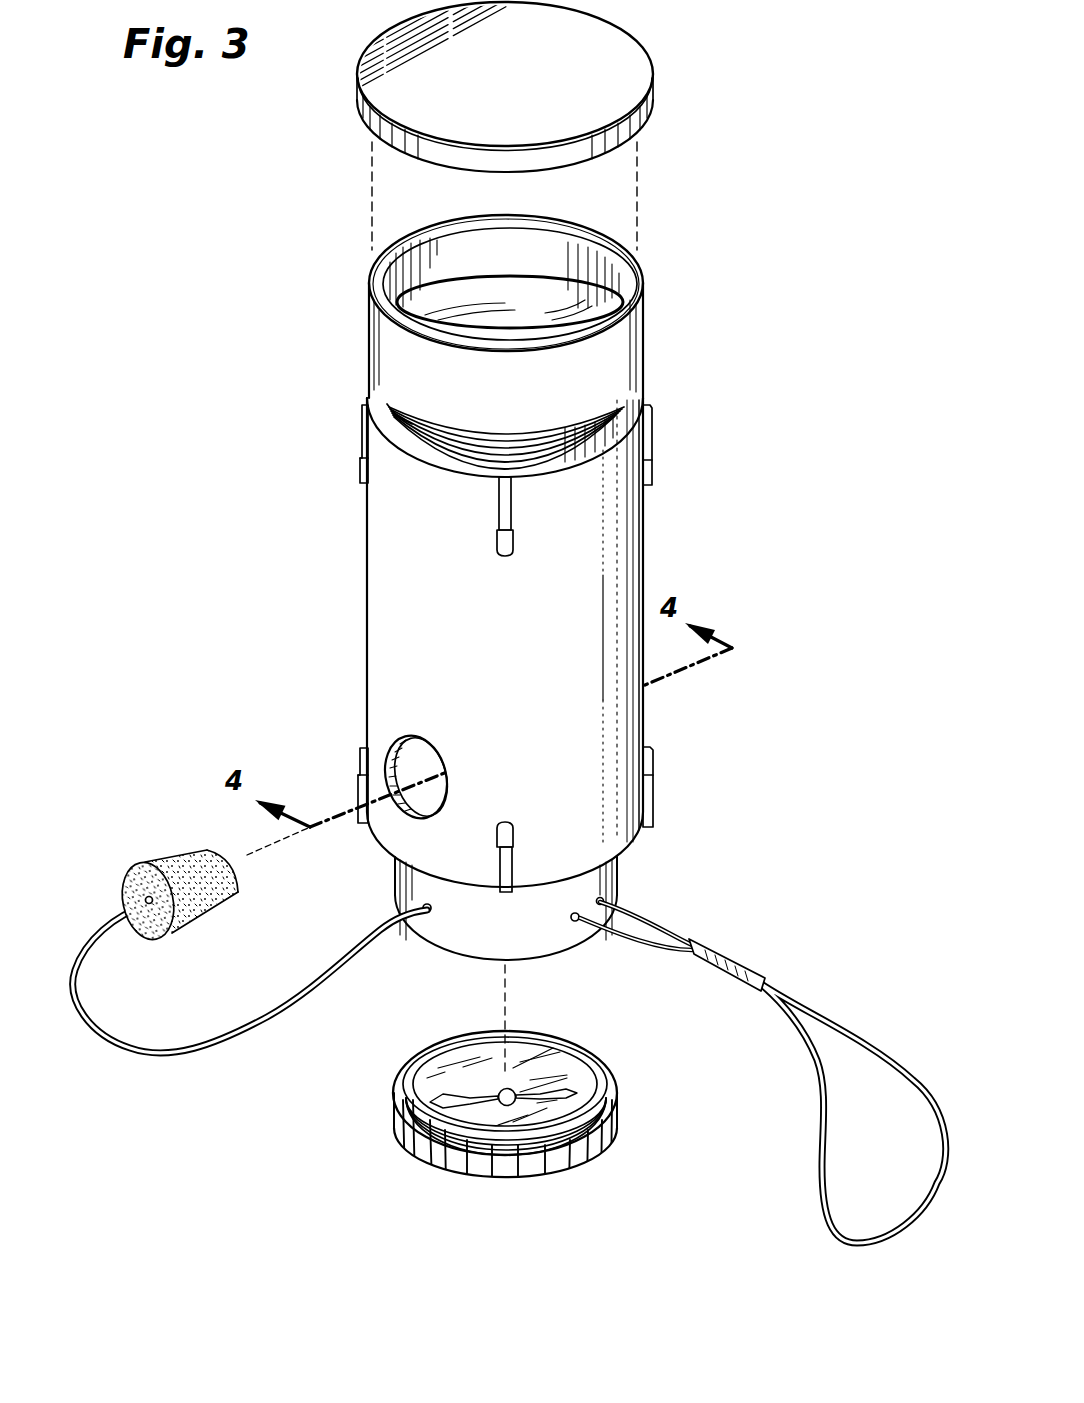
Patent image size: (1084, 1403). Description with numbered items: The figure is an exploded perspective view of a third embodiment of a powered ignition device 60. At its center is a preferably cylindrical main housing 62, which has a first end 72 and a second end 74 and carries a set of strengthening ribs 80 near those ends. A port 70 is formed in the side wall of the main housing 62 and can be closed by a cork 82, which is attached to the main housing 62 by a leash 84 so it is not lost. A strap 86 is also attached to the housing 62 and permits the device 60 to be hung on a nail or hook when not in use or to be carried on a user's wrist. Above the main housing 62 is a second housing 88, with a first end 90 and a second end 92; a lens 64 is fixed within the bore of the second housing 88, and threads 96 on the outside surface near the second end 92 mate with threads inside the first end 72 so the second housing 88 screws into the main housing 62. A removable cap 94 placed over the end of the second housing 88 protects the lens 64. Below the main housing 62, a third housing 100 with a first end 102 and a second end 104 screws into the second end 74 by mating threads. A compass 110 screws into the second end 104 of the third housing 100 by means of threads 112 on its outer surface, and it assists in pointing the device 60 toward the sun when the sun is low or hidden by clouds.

The powered ignition device 60 is at (533, 653).
The main housing 62 is at (645, 718).
The lens 64 is at (583, 316).
The port 70 is at (404, 803).
The first end of the main housing 72 is at (386, 437).
The second end of the main housing 74 is at (644, 842).
The strengthening ribs 80 is at (360, 430).
The cork 82 is at (177, 857).
The leash 84 is at (133, 1050).
The strap 86 is at (810, 999).
The second housing 88 is at (645, 332).
The first end of the second housing 90 is at (600, 238).
The second end of the second housing 92 is at (641, 397).
The removable cap 94 is at (641, 42).
The threads 96 is at (387, 407).
The third housing 100 is at (552, 932).
The first end of the third housing 102 is at (618, 886).
The second end of the third housing 104 is at (567, 955).
The compass 110 is at (463, 1113).
The threads 112 is at (573, 1136).